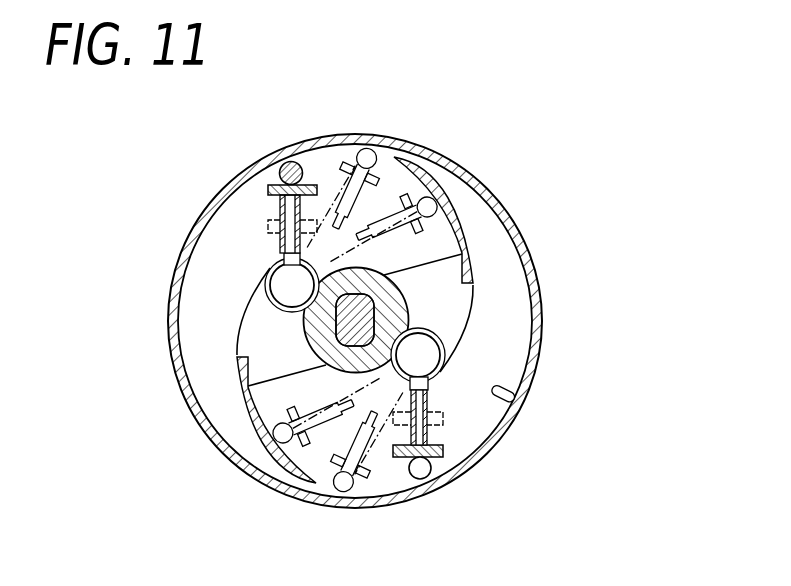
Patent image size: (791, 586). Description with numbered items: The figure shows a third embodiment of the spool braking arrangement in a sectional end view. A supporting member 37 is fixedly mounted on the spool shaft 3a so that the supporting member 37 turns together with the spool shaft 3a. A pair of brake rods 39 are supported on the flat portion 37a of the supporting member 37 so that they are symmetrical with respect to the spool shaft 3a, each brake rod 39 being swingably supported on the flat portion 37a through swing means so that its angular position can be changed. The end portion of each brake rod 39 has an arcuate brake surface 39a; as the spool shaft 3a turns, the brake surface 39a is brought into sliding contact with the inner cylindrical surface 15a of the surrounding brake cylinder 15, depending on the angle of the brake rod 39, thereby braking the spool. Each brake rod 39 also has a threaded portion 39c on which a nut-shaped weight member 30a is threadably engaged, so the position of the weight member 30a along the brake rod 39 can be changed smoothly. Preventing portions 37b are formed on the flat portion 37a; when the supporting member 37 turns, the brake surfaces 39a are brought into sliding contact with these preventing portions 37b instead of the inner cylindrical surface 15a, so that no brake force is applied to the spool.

The brake cylinder 15 is at (533, 262).
The inner cylindrical surface 15a is at (518, 398).
The supporting member 37 is at (400, 290).
The flat portion 37a is at (452, 320).
The preventing portions 37b is at (435, 160).
The spool shaft 3a is at (348, 322).
The brake rods 39 is at (280, 208).
The arcuate brake surface 39a is at (303, 166).
The threaded portions 39c is at (430, 424).
The weight members 30a is at (280, 177).